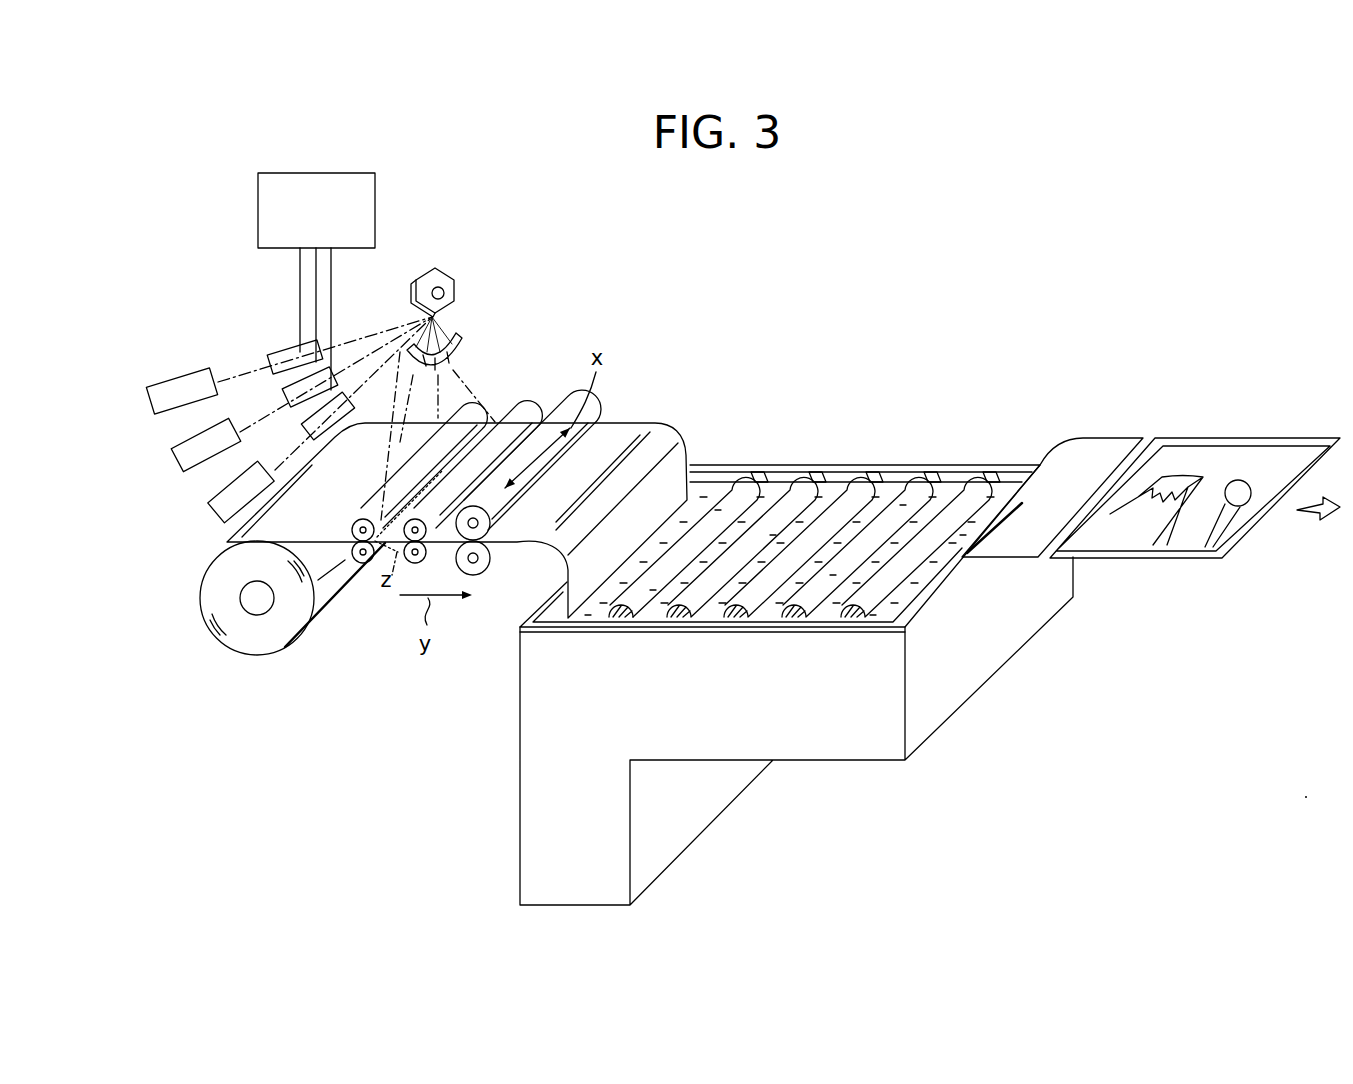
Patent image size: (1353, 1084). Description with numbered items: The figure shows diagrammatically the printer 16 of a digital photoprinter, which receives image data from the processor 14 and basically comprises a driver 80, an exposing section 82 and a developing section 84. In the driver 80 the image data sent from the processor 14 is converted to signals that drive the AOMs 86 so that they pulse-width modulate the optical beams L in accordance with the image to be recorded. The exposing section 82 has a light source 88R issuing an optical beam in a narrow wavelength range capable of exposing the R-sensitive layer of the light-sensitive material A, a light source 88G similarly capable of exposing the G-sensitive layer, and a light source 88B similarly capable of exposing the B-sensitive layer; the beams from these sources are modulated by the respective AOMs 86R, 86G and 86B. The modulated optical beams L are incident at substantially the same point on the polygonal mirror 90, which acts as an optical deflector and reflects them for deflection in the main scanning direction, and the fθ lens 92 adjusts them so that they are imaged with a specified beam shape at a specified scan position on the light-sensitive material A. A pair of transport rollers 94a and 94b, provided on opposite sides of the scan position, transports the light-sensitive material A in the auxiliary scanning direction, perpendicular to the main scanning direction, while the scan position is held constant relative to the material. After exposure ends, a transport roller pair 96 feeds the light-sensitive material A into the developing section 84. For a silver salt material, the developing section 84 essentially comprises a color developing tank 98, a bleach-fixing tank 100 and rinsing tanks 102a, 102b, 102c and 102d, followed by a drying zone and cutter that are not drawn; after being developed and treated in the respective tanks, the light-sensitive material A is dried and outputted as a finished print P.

The processor 14 is at (250, 210).
The printer 16 is at (841, 303).
The driver 80 is at (259, 173).
The exposing section 82 is at (612, 303).
The developing section 84 is at (974, 418).
The AOMs 86 is at (228, 257).
The AOM 86R is at (284, 350).
The AOM 86G is at (299, 381).
The AOM 86B is at (311, 415).
The light source 88R is at (160, 382).
The light source 88G is at (178, 452).
The light source 88B is at (215, 508).
The polygonal mirror 90 is at (452, 288).
The fθ lens 92 is at (462, 340).
The transport roller 94a is at (360, 600).
The transport roller 94b is at (522, 416).
The transport roller pair 96 is at (478, 575).
The color developing tank 98 is at (708, 482).
The bleach-fixing tank 100 is at (645, 628).
The rinsing tank 102a is at (836, 490).
The rinsing tank 102b is at (760, 626).
The rinsing tank 102c is at (803, 630).
The rinsing tank 102d is at (890, 630).
The light-sensitive material A is at (628, 430).
The optical beams L is at (472, 384).
The print P is at (1135, 545).